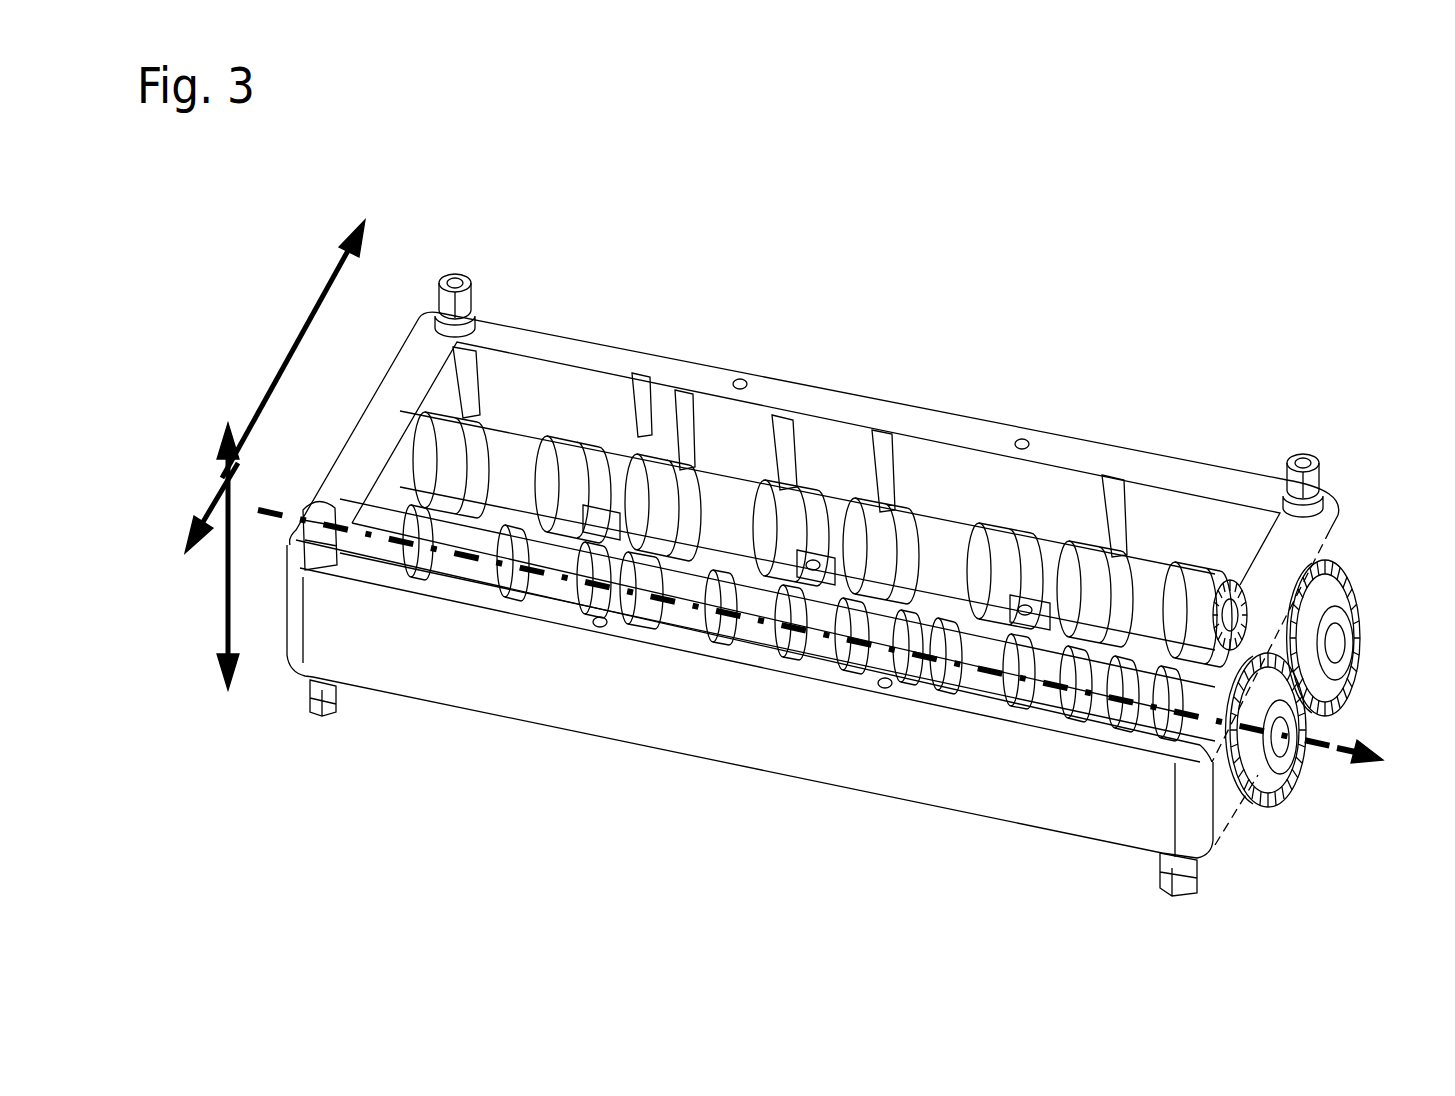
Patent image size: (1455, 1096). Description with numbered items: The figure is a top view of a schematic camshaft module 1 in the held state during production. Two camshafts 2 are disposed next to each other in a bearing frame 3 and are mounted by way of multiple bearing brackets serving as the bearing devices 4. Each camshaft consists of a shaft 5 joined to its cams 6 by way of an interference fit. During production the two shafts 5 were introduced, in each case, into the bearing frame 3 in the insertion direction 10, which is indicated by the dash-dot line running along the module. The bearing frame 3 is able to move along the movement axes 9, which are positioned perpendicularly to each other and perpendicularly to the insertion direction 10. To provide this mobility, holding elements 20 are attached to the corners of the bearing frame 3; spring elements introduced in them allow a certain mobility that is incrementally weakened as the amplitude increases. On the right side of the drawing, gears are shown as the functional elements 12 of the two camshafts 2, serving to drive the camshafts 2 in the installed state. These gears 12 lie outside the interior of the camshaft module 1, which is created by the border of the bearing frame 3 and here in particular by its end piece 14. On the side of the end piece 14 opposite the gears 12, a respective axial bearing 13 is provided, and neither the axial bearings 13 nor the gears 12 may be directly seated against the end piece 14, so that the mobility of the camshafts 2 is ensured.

The camshaft module 1 is at (1130, 430).
The camshafts 2 is at (588, 446).
The bearing frame 3 is at (653, 360).
The bearing devices 4 is at (1044, 543).
The shafts 5 is at (1088, 565).
The cams 6 is at (780, 487).
The movement axes 9 is at (225, 602).
The insertion direction 10 is at (580, 587).
The functional elements (gears) 12 is at (1333, 563).
The axial bearing 13 is at (1237, 577).
The end piece 14 is at (1327, 513).
The holding elements 20 is at (467, 292).